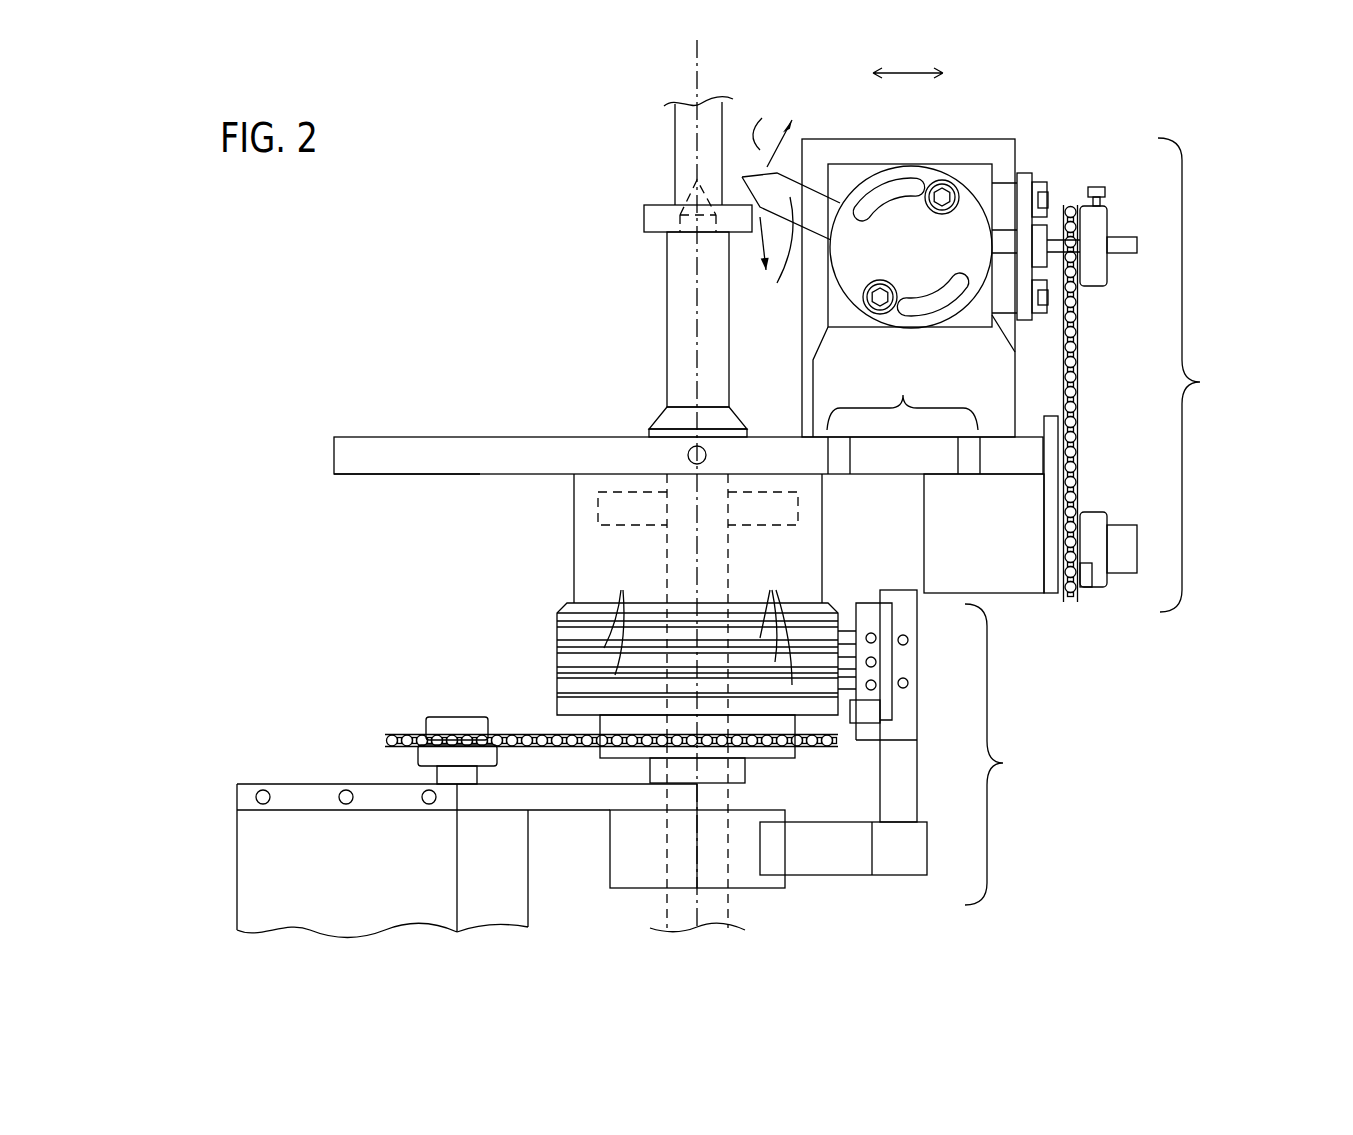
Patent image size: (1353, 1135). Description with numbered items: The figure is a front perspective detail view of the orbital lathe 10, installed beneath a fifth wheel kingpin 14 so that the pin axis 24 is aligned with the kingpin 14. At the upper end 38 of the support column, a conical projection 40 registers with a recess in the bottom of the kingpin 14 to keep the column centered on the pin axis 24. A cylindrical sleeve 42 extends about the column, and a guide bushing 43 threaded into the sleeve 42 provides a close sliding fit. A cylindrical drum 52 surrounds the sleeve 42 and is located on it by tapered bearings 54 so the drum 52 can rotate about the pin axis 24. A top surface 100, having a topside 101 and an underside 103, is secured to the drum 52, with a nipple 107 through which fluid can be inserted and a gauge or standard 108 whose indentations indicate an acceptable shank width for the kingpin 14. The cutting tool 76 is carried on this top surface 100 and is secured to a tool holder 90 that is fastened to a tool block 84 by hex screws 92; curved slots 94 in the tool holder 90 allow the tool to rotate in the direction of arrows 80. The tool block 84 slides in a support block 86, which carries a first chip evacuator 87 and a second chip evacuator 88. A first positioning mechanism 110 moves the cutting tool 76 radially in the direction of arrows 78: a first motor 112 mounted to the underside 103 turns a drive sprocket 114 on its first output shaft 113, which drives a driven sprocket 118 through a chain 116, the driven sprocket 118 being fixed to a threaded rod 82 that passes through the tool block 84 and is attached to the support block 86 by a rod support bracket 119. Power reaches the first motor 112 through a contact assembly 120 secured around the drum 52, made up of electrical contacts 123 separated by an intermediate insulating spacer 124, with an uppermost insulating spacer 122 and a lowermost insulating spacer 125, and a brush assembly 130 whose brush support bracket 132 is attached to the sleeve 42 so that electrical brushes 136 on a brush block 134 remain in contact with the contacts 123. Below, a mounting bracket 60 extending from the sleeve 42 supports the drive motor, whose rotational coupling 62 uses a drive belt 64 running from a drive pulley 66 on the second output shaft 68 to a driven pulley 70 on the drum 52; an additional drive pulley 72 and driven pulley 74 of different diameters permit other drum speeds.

The orbital lathe 10 is at (1222, 78).
The fifth wheel kingpin 14 is at (675, 155).
The pin axis 24 is at (697, 55).
The upper end 38 is at (667, 292).
The conical projection 40 is at (690, 193).
The cylindrical sleeve 42 is at (745, 915).
The guide bushing 43 is at (740, 420).
The cylindrical drum 52 is at (573, 542).
The tapered bearings 54 is at (598, 505).
The mounting bracket 60 is at (260, 858).
The rotational coupling 62 is at (409, 770).
The drive belt 64 is at (527, 745).
The drive pulley 66 is at (428, 755).
The second output shaft 68 is at (453, 773).
The driven pulley 70 is at (625, 757).
The additional drive pulley 72 is at (450, 717).
The additional driven pulley 74 is at (767, 725).
The cutting tool 76 is at (771, 253).
The arrows 78 is at (910, 73).
The arrows 80 is at (791, 163).
The threaded rod 82 is at (1122, 235).
The tool block 84 is at (980, 178).
The support block 86 is at (897, 138).
The first chip evacuator 87 is at (820, 342).
The second chip evacuator 88 is at (1015, 335).
The tool holder 90 is at (930, 245).
The hex screws 92 is at (945, 200).
The curved slots 94 is at (893, 200).
The top surface 100 is at (678, 423).
The topside 101 is at (465, 435).
The underside 103 is at (410, 477).
The nipple 107 is at (688, 455).
The gauge or standard 108 is at (903, 395).
The first positioning mechanism 110 is at (1200, 382).
The first motor 112 is at (1006, 547).
The first output shaft 113 is at (1120, 542).
The drive sprocket 114 is at (1082, 588).
The chain 116 is at (1075, 397).
The driven sprocket 118 is at (1098, 268).
The rod support bracket 119 is at (1025, 170).
The contact assembly 120 is at (611, 631).
The uppermost insulating spacer 122 is at (575, 620).
The electrical contacts 123 is at (772, 615).
The intermediate insulating spacer 124 is at (612, 610).
The lowermost insulating spacer 125 is at (577, 705).
The brush assembly 130 is at (1005, 762).
The brush support bracket 132 is at (832, 860).
The brush block 134 is at (873, 617).
The electrical brushes 136 is at (846, 688).